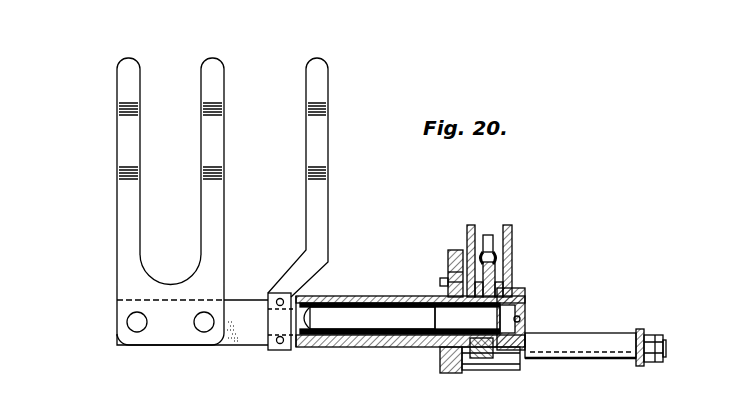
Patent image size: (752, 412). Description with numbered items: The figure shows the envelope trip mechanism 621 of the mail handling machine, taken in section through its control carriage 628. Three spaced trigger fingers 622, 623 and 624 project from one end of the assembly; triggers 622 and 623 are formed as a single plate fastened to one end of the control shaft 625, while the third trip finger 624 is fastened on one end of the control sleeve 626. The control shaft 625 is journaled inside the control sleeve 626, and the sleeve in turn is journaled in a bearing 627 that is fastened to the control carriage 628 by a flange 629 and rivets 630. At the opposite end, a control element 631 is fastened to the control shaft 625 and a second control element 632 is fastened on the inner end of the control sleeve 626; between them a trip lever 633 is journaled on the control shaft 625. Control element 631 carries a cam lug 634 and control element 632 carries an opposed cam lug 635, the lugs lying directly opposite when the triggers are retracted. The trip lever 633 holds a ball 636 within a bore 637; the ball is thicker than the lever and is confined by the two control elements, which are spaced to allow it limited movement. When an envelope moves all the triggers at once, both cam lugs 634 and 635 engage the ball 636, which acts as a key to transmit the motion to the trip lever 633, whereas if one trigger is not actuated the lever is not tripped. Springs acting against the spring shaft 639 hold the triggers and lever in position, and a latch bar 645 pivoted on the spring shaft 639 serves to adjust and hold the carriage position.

The fork assembly 621 is at (368, 228).
The trigger finger 622 is at (122, 76).
The trigger finger 623 is at (208, 72).
The trip finger 624 is at (316, 72).
The control shaft 625 is at (242, 340).
The control sleeve 626 is at (298, 349).
The bearing 627 is at (375, 297).
The control carriage 628 is at (449, 252).
The flange 629 is at (447, 272).
The rivets 630 is at (440, 282).
The control element 631 is at (508, 228).
The control element 632 is at (468, 226).
The trip lever 633 is at (488, 235).
The cam lug 634 is at (509, 279).
The cam lug 635 is at (481, 306).
The ball 636 is at (505, 258).
The bore 637 is at (513, 246).
The spring shaft 639 is at (576, 346).
The latch bar 645 is at (638, 330).